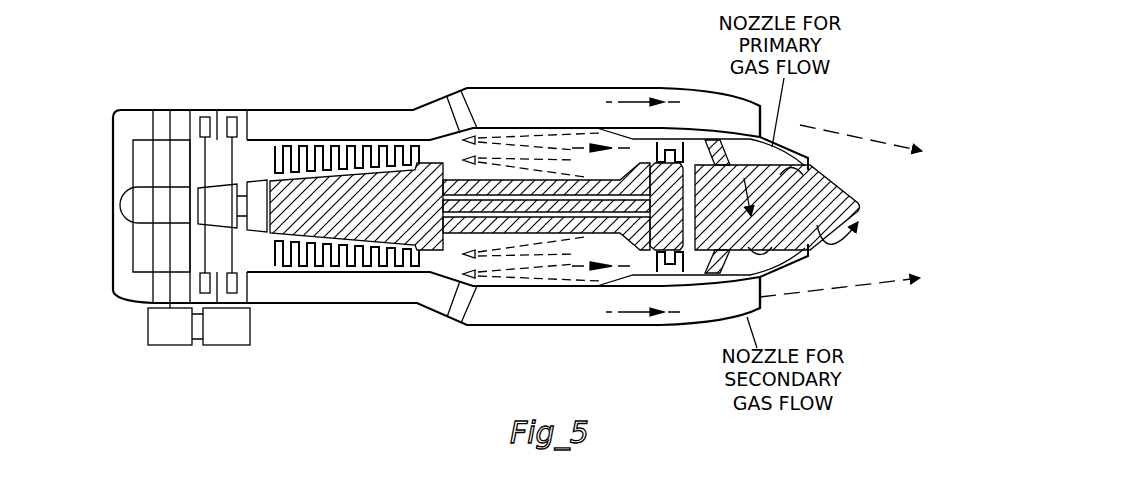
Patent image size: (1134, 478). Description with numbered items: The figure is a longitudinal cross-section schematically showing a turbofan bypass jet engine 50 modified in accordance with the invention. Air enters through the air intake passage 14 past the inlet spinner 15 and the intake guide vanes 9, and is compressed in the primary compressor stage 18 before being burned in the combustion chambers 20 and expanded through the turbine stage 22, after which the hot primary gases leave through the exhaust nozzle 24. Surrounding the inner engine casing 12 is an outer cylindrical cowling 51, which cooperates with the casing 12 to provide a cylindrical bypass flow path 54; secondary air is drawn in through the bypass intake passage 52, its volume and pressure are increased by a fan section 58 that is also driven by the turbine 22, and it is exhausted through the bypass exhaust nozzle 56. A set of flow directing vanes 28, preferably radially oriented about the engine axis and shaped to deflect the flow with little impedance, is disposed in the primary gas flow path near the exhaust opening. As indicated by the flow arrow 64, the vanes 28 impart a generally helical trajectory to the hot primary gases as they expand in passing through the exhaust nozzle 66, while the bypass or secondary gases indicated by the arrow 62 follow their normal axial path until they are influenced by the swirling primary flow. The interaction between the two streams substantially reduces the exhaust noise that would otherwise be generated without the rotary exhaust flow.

The intake guide vanes 9 is at (157, 145).
The engine casing 12 is at (432, 130).
The air intake passage 14 is at (137, 245).
The inlet spinner 15 is at (168, 221).
The compressor section 18 is at (320, 136).
The combustion section 20 is at (536, 138).
The turbine section 22 is at (678, 140).
The exhaust nozzle 24 is at (783, 147).
The flow directing vanes 28 is at (711, 274).
The turbofan bypass jet engine 50 is at (514, 330).
The outer cylindrical cowling 51 is at (483, 88).
The bypass intake passage 52 is at (135, 282).
The bypass flow path 54 is at (355, 290).
The bypass exhaust nozzle 56 is at (768, 93).
The fan section 58 is at (205, 114).
The flow arrow 62 is at (876, 140).
The flow arrow 64 is at (862, 240).
The exhaust nozzle 66 is at (792, 264).